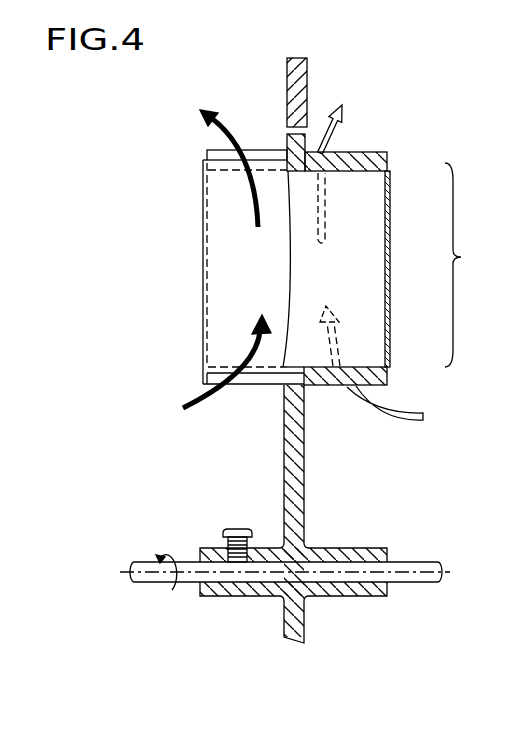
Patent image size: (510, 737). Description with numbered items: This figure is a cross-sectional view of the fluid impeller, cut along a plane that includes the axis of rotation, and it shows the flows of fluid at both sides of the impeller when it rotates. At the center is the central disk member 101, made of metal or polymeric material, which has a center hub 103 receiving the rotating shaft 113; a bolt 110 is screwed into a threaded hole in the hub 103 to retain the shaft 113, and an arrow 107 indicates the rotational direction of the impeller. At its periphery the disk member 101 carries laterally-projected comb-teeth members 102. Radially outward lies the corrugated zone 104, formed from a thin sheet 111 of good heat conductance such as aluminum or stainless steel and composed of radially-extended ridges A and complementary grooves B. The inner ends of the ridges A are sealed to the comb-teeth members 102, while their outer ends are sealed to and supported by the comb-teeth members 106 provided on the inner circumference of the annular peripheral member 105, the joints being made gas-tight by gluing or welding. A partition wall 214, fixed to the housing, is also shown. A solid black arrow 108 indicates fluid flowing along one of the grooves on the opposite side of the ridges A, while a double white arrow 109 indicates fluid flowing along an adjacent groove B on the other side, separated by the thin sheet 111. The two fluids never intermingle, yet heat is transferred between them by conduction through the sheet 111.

The partition wall 214 is at (303, 75).
The annular peripheral member 105 is at (288, 137).
The comb-teeth members 106 is at (385, 151).
The thin sheet 111 is at (217, 188).
The ridges A is at (227, 262).
The grooves B is at (352, 225).
The corrugated zone 104 is at (442, 265).
The solid black arrow 108 is at (208, 397).
The double white arrow 109 is at (390, 407).
The comb-teeth members 102 is at (332, 387).
The central disk member 101 is at (293, 442).
The center hub 103 is at (200, 548).
The rotating shaft 113 is at (417, 565).
The bolt 110 is at (238, 529).
The arrow 107 is at (168, 591).